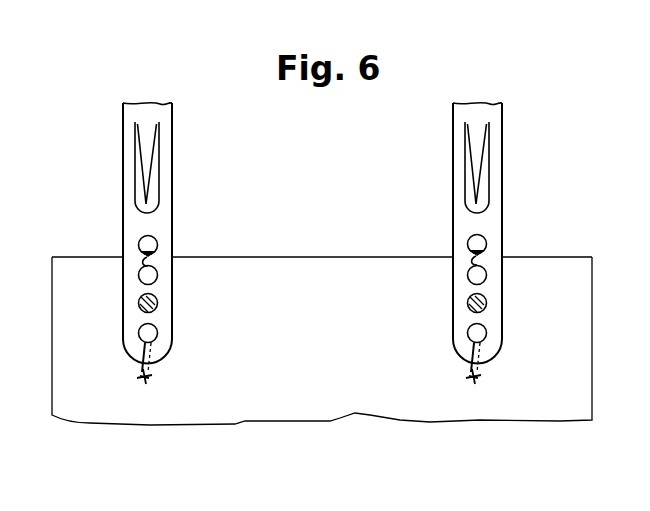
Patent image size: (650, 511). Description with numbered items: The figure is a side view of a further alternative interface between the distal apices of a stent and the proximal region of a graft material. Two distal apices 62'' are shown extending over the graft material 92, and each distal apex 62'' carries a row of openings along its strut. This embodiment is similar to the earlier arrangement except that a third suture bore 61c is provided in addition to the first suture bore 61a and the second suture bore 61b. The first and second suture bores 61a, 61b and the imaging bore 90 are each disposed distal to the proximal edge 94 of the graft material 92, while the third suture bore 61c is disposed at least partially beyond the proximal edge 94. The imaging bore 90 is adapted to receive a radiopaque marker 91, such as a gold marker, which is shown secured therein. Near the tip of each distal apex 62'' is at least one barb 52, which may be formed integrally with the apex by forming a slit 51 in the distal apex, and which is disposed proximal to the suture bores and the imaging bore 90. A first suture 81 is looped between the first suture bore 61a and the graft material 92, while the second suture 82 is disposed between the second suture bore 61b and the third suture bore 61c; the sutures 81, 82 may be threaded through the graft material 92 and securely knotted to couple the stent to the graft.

The slit 51 is at (146, 206).
The barb 52 is at (157, 200).
The first suture bore 61a is at (140, 334).
The second suture bore 61b is at (140, 276).
The third suture bore 61c is at (144, 238).
The distal apex 62'' is at (312, 234).
The first suture 81 is at (140, 374).
The second suture 82 is at (156, 260).
The imaging bore 90 is at (139, 304).
The radiopaque marker 91 is at (158, 303).
The graft material 92 is at (60, 325).
The proximal edge 94 is at (58, 277).